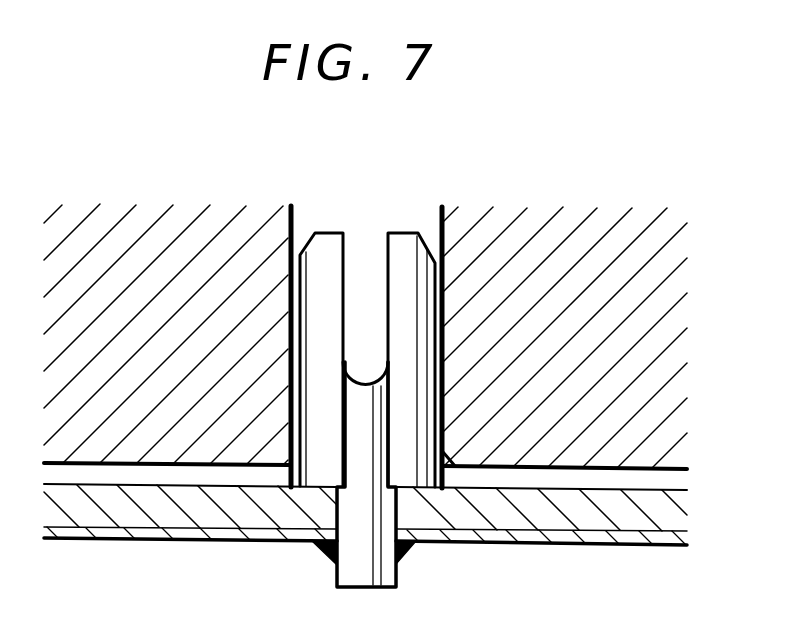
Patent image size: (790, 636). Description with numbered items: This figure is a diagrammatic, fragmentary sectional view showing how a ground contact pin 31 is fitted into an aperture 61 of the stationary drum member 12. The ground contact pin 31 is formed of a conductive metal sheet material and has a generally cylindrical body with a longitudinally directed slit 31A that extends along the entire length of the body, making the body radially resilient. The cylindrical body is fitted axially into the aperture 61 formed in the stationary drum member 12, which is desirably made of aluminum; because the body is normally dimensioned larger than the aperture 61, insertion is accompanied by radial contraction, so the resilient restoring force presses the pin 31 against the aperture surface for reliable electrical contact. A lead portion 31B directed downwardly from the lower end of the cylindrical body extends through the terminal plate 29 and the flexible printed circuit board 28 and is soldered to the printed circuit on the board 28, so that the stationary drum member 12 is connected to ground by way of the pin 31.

The stationary drum member 12 is at (580, 245).
The aperture 61 is at (441, 224).
The ground contact pin 31 is at (318, 258).
The slit 31A is at (347, 257).
The lead portion 31B is at (343, 567).
The terminal plate 29 is at (163, 508).
The flexible printed circuit board 28 is at (582, 543).